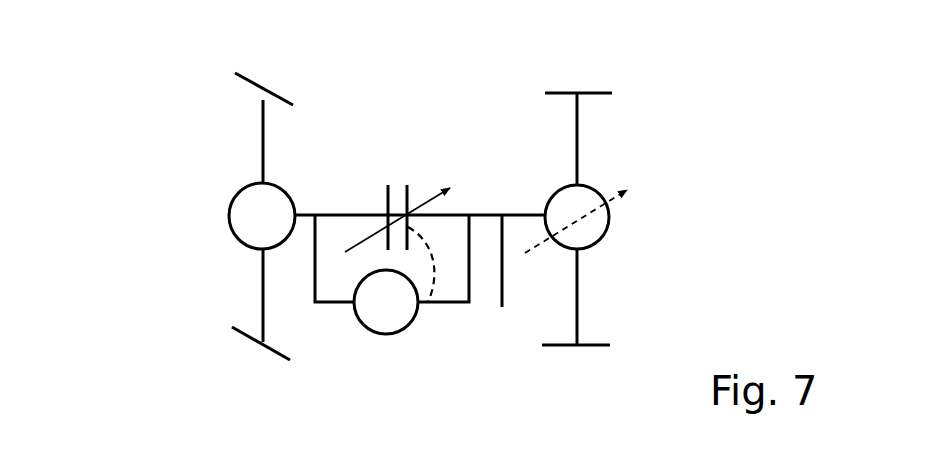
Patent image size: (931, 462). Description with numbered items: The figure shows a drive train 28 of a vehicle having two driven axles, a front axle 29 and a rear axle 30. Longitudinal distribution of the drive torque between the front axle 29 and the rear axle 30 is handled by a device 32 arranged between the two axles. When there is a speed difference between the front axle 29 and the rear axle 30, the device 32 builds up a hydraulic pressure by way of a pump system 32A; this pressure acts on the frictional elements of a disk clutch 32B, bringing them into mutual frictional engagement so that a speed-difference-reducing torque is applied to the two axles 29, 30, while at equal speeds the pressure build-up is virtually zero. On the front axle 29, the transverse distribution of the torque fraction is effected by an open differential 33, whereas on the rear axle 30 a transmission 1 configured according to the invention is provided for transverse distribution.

The drive train 28 is at (158, 160).
The front axle 29 is at (254, 127).
The open differential 33 is at (219, 230).
The device 32 is at (397, 148).
The disk clutch 32B is at (457, 167).
The pump system 32A is at (413, 332).
The rear axle 30 is at (594, 149).
The transmission 1 is at (617, 238).